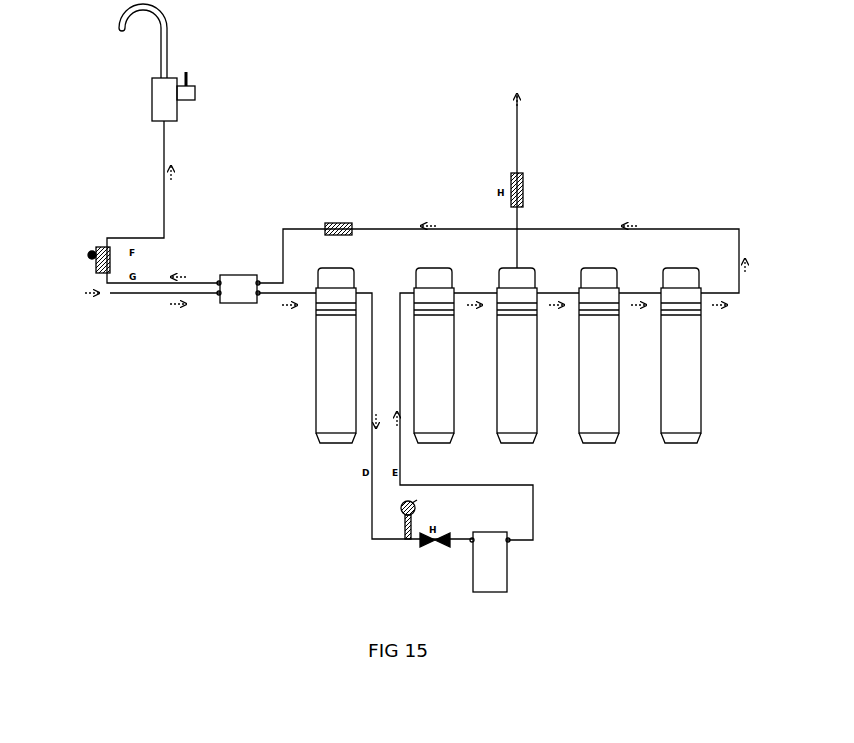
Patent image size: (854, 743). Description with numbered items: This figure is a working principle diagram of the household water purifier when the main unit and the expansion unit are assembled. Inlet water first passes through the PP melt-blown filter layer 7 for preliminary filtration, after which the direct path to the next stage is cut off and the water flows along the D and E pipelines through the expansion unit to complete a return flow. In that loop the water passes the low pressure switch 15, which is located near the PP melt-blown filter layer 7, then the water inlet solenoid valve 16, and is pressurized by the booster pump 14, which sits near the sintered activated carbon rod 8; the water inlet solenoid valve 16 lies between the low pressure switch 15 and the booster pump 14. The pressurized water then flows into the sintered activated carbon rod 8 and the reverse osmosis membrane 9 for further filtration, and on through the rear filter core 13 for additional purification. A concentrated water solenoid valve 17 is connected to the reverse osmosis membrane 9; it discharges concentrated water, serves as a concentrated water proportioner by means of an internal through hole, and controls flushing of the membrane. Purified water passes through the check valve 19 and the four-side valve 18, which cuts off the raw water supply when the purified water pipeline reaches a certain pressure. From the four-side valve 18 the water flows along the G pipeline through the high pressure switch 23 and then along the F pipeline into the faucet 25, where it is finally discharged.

The PP melt-blown filter layer 7 is at (338, 388).
The sintered activated carbon rod 8 is at (427, 400).
The reverse osmosis membrane 9 is at (508, 400).
The rear filter core 13 is at (602, 412).
The booster pump 14 is at (492, 553).
The low pressure switch 15 is at (398, 542).
The water inlet solenoid valve 16 is at (432, 545).
The concentrated water solenoid valve 17 is at (508, 185).
The four-side valve 18 is at (240, 292).
The check valve 19 is at (335, 222).
The high pressure switch 23 is at (100, 243).
The faucet 25 is at (158, 105).